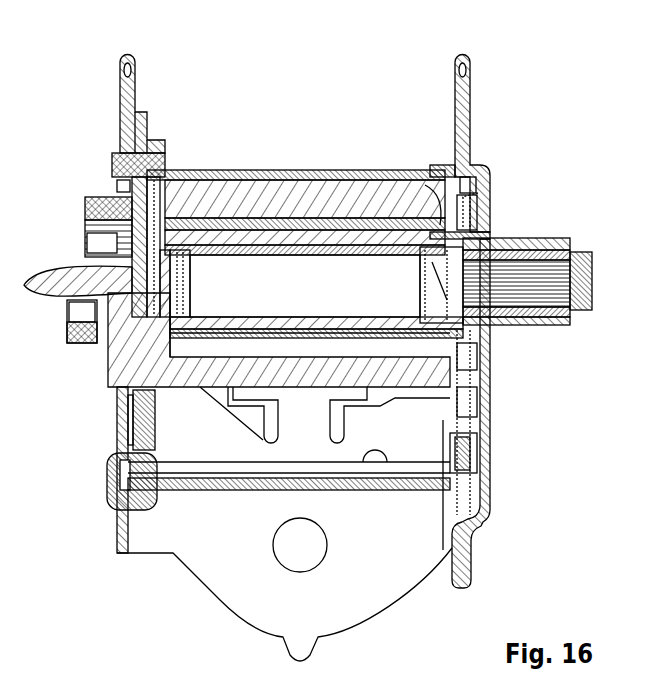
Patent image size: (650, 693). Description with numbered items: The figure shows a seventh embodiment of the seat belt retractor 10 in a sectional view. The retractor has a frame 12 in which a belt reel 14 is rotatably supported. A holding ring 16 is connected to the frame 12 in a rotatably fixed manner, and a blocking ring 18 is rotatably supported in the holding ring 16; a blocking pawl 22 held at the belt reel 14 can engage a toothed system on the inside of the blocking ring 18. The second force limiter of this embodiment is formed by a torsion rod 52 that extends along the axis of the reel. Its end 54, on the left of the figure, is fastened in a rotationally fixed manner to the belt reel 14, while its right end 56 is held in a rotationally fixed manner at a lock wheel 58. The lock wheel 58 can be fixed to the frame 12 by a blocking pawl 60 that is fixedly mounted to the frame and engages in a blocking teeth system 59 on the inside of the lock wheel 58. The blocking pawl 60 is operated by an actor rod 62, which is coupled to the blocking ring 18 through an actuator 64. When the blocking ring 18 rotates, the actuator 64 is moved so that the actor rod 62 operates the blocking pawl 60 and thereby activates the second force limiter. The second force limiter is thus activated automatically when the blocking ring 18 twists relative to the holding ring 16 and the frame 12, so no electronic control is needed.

The seat belt retractor 10 is at (553, 72).
The frame 12 is at (472, 105).
The belt reel 14 is at (104, 362).
The holding ring 16 is at (122, 152).
The blocking ring 18 is at (112, 160).
The blocking pawl 22 is at (87, 217).
The torsion rod 52 is at (278, 272).
The end 54 is at (178, 215).
The right end 56 is at (447, 208).
The lock wheel 58 is at (466, 197).
The blocking teeth system 59 is at (478, 221).
The blocking pawl 60 is at (483, 423).
The actor rod 62 is at (407, 490).
The actuator 64 is at (113, 423).